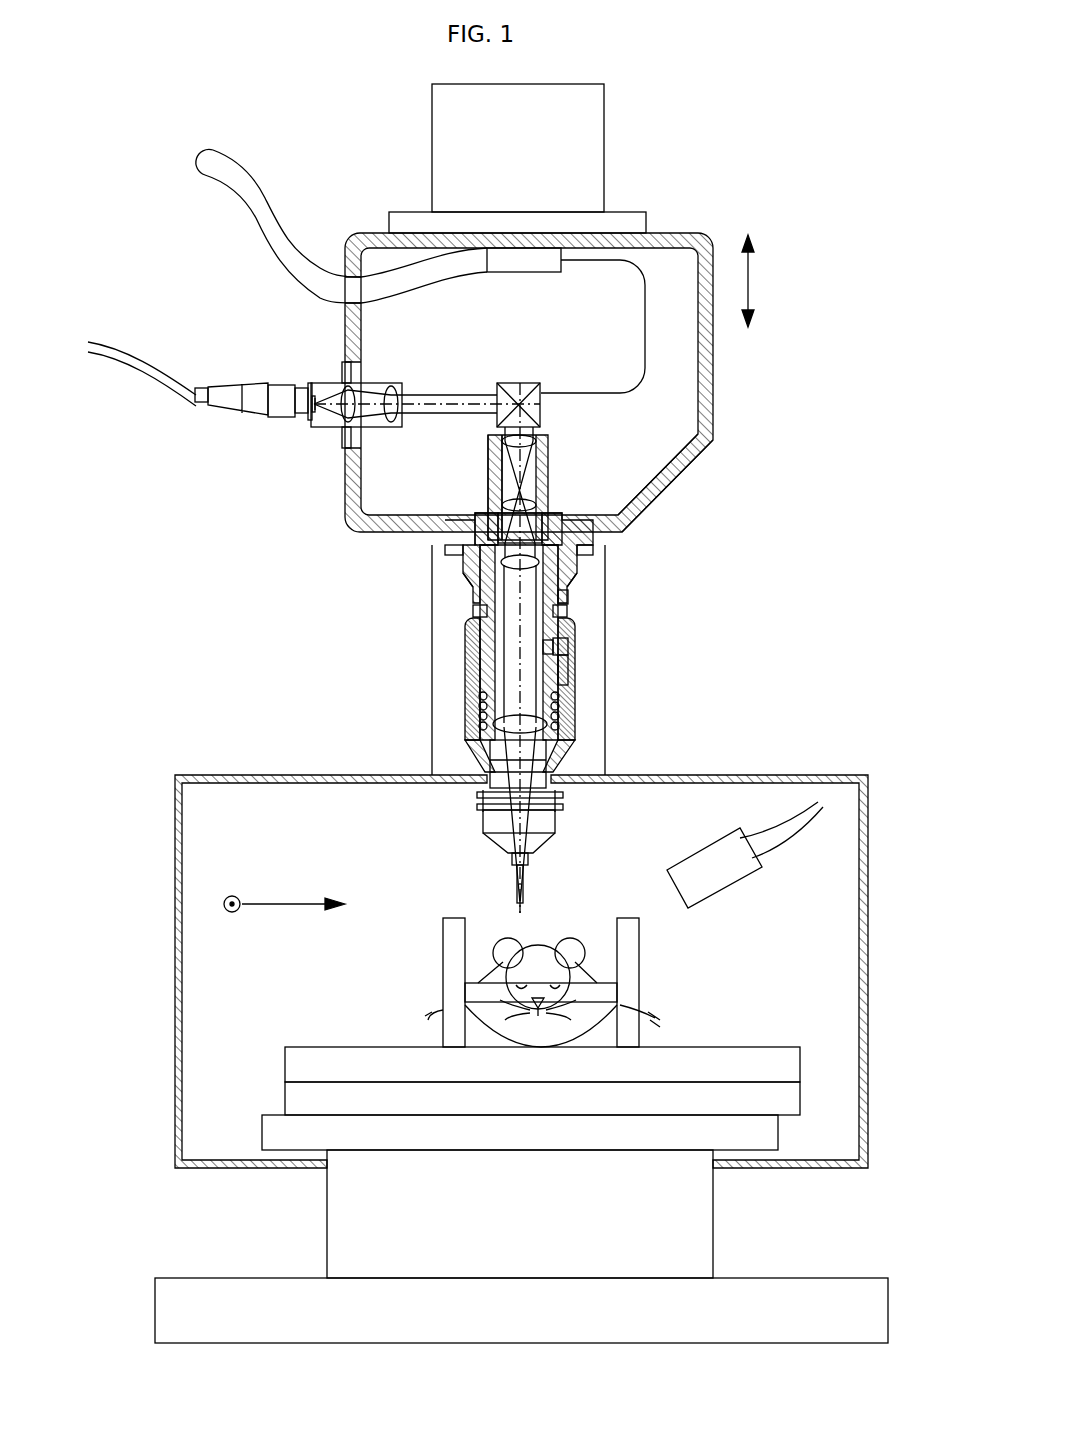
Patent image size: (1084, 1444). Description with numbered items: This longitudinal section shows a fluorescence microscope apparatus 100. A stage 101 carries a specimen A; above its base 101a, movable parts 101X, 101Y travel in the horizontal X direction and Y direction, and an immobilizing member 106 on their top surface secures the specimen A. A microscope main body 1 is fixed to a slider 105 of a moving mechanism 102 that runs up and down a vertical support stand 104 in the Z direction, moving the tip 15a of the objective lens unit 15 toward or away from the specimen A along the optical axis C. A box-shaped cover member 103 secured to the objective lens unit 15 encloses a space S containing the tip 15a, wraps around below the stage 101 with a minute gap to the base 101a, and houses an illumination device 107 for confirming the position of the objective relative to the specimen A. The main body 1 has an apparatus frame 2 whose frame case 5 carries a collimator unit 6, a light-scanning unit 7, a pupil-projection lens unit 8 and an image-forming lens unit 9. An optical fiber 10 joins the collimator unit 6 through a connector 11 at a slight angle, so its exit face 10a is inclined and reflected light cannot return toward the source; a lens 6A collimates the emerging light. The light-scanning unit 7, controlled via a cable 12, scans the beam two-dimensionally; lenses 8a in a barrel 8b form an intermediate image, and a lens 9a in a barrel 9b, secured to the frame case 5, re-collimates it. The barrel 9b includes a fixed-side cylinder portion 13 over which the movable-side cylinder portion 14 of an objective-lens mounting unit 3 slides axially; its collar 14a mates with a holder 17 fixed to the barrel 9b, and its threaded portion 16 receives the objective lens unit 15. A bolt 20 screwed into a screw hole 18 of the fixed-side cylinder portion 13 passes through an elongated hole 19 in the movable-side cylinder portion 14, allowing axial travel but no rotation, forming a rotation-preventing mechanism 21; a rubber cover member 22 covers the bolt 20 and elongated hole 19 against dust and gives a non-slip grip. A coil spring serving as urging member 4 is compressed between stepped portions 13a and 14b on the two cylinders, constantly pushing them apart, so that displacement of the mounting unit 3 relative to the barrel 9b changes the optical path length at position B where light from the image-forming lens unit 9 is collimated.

The fluorescence microscope apparatus 100 is at (842, 148).
The moving mechanism 102 is at (581, 158).
The support stand 104 is at (604, 122).
The slider 105 is at (612, 212).
The microscope main body 1 is at (590, 389).
The frame case 5 is at (713, 408).
The apparatus frame 2 is at (683, 478).
The Z direction Z is at (757, 281).
The cable 12 is at (253, 193).
The optical fiber 10 is at (140, 355).
The exit face 10a is at (318, 395).
The connector 11 is at (272, 418).
The collimator unit 6 is at (385, 383).
The lens 6A is at (340, 417).
The light-scanning unit 7 is at (520, 383).
The pupil-projection lens unit 8 is at (552, 447).
The lenses 8a is at (545, 438).
The barrel 8b is at (488, 470).
The image-forming lens unit 9 is at (467, 597).
The lens 9a is at (500, 558).
The barrel 9b is at (600, 549).
The objective-lens mounting unit 3 is at (527, 666).
The urging member 4 is at (557, 700).
The fixed-side cylinder portion 13 is at (475, 631).
The stepped portion 13a is at (480, 690).
The movable-side cylinder portion 14 is at (560, 762).
The collar 14a is at (575, 572).
The stepped portion 14b is at (478, 742).
The holder 17 is at (566, 600).
The screw hole 18 is at (548, 645).
The elongated hole 19 is at (565, 670).
The bolt 20 is at (566, 637).
The rotation-preventing mechanism 21 is at (629, 652).
The cover member 22 is at (477, 715).
The threaded portion 16 is at (502, 788).
The objective lens unit 15 is at (557, 826).
The tip 15a is at (512, 913).
The optical axis C is at (520, 843).
The position B is at (470, 760).
The cover member 103 is at (860, 775).
The space S is at (222, 800).
The X-direction X is at (293, 893).
The Y-direction Y is at (219, 905).
The illumination device 107 is at (700, 858).
The immobilizing member 106 is at (640, 968).
The specimen A is at (540, 965).
The stage 101 is at (539, 1160).
The movable part 101X is at (330, 1058).
The movable part 101Y is at (262, 1100).
The base 101a is at (713, 1213).